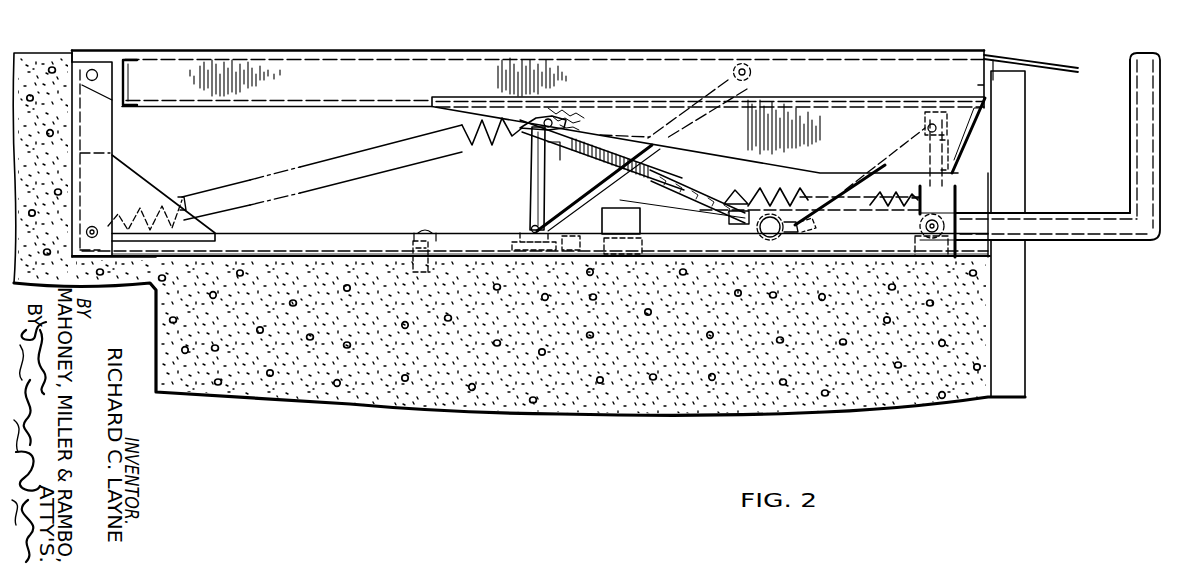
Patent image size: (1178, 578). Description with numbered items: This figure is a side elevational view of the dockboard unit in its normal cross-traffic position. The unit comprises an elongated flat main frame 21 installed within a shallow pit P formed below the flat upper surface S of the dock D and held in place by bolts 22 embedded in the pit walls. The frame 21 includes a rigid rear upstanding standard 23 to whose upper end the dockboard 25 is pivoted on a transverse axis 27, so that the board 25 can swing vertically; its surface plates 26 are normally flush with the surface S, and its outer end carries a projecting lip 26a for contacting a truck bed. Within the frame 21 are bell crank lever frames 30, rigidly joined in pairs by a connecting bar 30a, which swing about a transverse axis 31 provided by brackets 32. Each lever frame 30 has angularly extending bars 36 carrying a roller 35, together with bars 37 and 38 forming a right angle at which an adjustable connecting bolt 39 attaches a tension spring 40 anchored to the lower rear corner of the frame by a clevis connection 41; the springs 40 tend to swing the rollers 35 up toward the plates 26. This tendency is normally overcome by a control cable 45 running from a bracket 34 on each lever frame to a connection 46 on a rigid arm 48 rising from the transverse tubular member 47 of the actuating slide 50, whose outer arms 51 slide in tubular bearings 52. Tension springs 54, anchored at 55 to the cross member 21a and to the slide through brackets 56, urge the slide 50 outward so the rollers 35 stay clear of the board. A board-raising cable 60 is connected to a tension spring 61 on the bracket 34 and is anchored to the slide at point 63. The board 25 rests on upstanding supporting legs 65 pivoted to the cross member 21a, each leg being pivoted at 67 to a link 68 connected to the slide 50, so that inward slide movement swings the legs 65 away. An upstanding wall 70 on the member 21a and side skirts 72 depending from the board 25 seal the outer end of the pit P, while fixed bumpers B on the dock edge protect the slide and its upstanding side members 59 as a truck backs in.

The upper surface of the dock S is at (44, 56).
The dock D is at (484, 412).
The pit P is at (354, 218).
The fixed bumpers B is at (1012, 335).
The main frame 21 is at (285, 243).
The cross member 21a is at (934, 248).
The bolts 22 is at (431, 242).
The dockboard-supporting standard 23 is at (112, 124).
The dockboard 25 is at (448, 74).
The surface plates 26 is at (375, 51).
The projecting lip 26a is at (1032, 61).
The transverse pivot axis 27 is at (94, 68).
The bell crank lever frames 30 is at (522, 204).
The connecting bar 30a is at (604, 168).
The transverse pivot axis of lever frames 31 is at (534, 240).
The brackets 32 is at (550, 240).
The bracket 34 is at (551, 114).
The roller 35 is at (742, 62).
The angularly extending bars 36 is at (672, 126).
The bars 37 is at (618, 138).
The bars 38 is at (531, 168).
The adjustable connecting bolt 39 is at (533, 135).
The tension springs 40 is at (470, 140).
The clevis connections 41 is at (100, 222).
The control cable 45 is at (690, 192).
The cable connection point 46 is at (738, 228).
The transverse tubular member 47 is at (790, 236).
The rigid arm 48 is at (772, 240).
The actuating slide 50 is at (1064, 216).
The outer arms 51 is at (1050, 241).
The tubular bearings 52 is at (625, 218).
The tension springs 54 is at (779, 200).
The spring anchorage 55 is at (918, 194).
The brackets 56 is at (736, 196).
The upstanding side bumper members 59 is at (1131, 116).
The board-raising control cable 60 is at (690, 196).
The tension spring 61 is at (590, 152).
The cable anchor point 63 is at (810, 232).
The supporting legs 65 is at (944, 148).
The leg-to-link pivot 67 is at (927, 124).
The link 68 is at (858, 176).
The upstanding wall 70 is at (956, 194).
The side skirts 72 is at (973, 140).